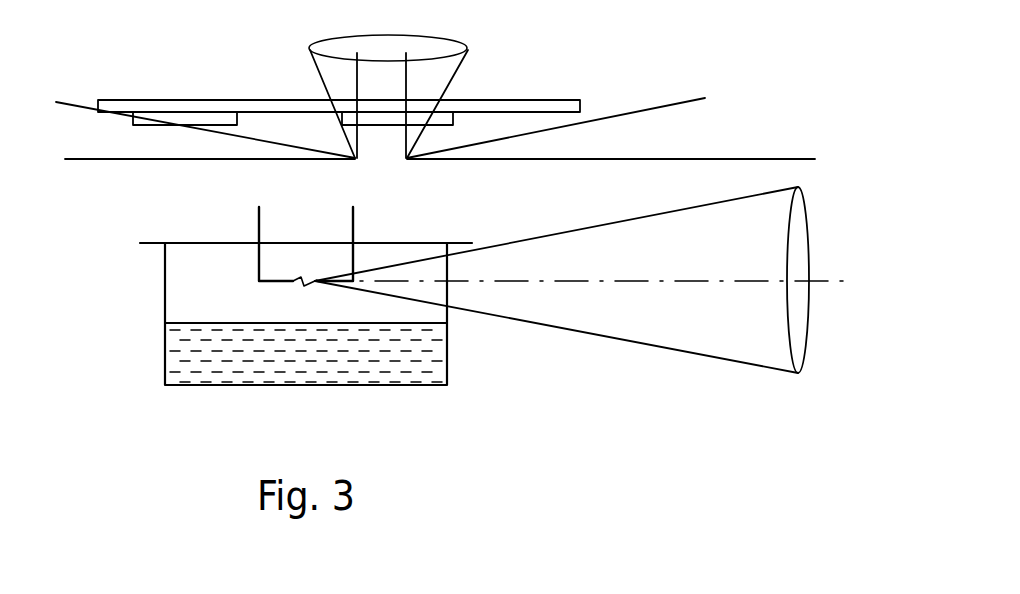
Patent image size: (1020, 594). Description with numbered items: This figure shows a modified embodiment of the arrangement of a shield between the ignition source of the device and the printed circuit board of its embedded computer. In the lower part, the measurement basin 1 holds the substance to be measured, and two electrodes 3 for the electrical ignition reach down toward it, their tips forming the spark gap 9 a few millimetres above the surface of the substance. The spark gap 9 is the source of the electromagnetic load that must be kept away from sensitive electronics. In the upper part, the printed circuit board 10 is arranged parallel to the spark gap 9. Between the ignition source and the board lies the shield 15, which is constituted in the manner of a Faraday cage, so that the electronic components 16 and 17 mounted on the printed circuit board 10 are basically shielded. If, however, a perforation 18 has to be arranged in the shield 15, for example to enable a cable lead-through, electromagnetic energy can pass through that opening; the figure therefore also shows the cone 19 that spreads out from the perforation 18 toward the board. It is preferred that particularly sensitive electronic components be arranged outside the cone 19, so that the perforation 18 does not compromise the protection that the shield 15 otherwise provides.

The measurement basin 1 is at (163, 348).
The electrodes 3 is at (257, 222).
The spark gap 9 is at (295, 283).
The printed circuit board 10 is at (558, 107).
The shield 15 is at (758, 157).
The electronic component 16 is at (187, 120).
The electronic component 17 is at (445, 120).
The perforation 18 is at (380, 152).
The cone 19 is at (320, 78).